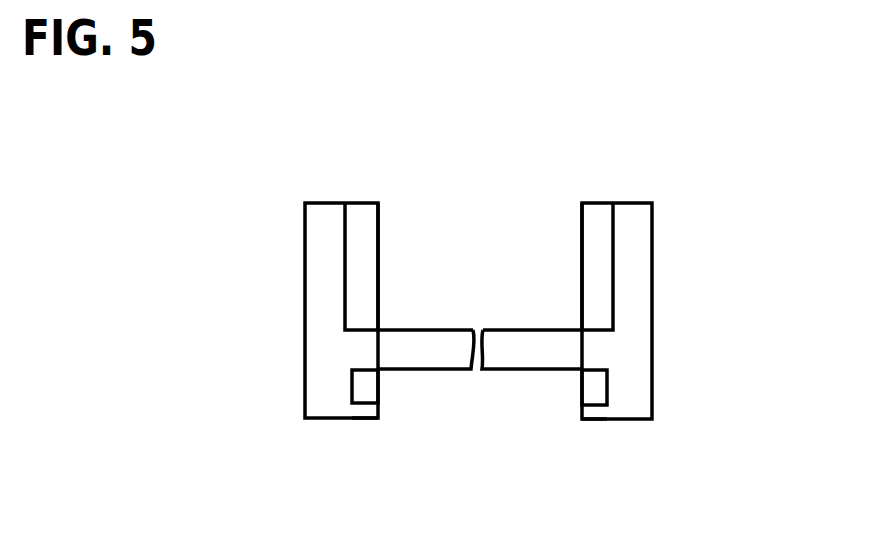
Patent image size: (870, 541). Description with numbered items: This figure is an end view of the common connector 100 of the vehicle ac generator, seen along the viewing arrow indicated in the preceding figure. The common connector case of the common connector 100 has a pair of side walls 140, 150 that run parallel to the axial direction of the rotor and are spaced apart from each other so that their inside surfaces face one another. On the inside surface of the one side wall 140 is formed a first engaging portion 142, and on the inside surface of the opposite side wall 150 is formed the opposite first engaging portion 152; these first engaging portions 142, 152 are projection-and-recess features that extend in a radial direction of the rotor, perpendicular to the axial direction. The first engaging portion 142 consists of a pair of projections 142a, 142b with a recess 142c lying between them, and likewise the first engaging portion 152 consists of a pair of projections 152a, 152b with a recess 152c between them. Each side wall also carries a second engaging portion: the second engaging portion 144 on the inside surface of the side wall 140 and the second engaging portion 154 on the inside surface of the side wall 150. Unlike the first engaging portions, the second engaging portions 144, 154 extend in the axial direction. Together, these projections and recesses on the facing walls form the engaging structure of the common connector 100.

The common connector 100 is at (627, 156).
The side wall 140 is at (322, 221).
The first engaging portion 142 is at (370, 389).
The projection 142a is at (378, 347).
The projection 142b is at (383, 410).
The recess 142c is at (364, 388).
The second engaging portion 144 is at (380, 255).
The side wall 150 is at (637, 237).
The first engaging portion 152 is at (590, 390).
The projection 152a is at (582, 352).
The projection 152b is at (570, 408).
The recess 152c is at (590, 391).
The second engaging portion 154 is at (582, 230).